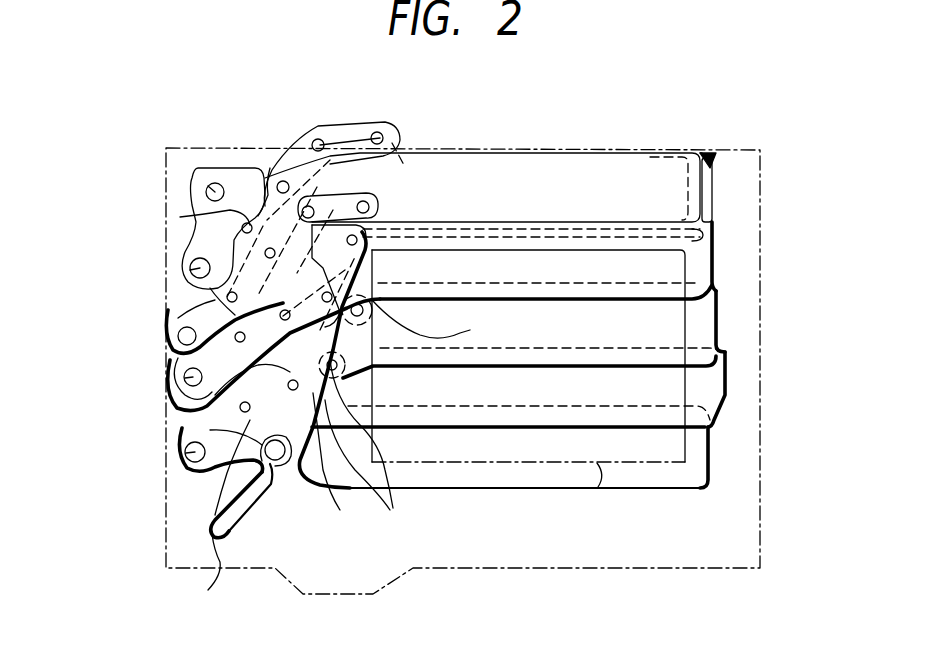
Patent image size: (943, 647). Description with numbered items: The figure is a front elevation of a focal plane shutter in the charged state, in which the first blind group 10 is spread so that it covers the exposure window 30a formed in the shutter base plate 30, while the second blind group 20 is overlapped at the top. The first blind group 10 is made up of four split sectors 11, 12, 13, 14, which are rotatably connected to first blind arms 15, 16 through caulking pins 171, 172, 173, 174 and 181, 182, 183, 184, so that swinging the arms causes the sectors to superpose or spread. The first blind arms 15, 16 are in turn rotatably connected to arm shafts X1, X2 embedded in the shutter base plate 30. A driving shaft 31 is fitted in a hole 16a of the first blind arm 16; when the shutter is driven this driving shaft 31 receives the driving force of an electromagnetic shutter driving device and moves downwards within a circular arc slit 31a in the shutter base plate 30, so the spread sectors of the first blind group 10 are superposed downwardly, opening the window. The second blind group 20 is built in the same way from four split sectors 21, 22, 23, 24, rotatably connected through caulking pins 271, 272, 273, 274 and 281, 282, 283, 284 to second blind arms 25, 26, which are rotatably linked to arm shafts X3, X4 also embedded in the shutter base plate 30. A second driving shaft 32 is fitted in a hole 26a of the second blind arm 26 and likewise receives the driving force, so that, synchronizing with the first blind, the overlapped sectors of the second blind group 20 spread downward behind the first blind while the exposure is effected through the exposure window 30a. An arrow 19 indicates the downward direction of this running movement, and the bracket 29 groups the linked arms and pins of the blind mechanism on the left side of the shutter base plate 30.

The first blind group 10 is at (538, 495).
The split sector 11 is at (722, 256).
The split sector 12 is at (718, 328).
The split sector 13 is at (728, 390).
The split sector 14 is at (710, 452).
The first blind arm 15 is at (192, 396).
The first blind arm 16 is at (198, 466).
The hole 16a is at (266, 496).
The caulking pin 171 is at (225, 505).
The caulking pin 172 is at (377, 450).
The caulking pin 173 is at (364, 310).
The caulking pin 174 is at (370, 267).
The caulking pin 181 is at (240, 408).
The caulking pin 182 is at (351, 466).
The caulking pin 183 is at (340, 370).
The caulking pin 184 is at (440, 323).
The direction of movement 19 is at (197, 508).
The second blind group 20 is at (550, 146).
The split sector 21 is at (692, 163).
The split sector 22 is at (713, 193).
The split sector 23 is at (713, 228).
The split sector 24 is at (712, 160).
The second blind arm 25 is at (180, 320).
The second blind arm 26 is at (243, 187).
The hole 26a is at (203, 168).
The caulking pin 271 is at (227, 297).
The caulking pin 272 is at (265, 253).
The caulking pin 273 is at (314, 206).
The caulking pin 274 is at (370, 207).
The caulking pin 281 is at (242, 228).
The caulking pin 282 is at (283, 180).
The caulking pin 283 is at (320, 140).
The caulking pin 284 is at (372, 132).
The linkage mechanism 29 is at (168, 128).
The shutter base plate 30 is at (520, 570).
The exposure window 30a is at (598, 489).
The driving shaft 31 is at (283, 462).
The circular arc slit 31a is at (208, 590).
The driving shaft 32 is at (208, 186).
The arm shaft X1 is at (184, 377).
The arm shaft X2 is at (186, 452).
The arm shaft X3 is at (178, 336).
The arm shaft X4 is at (190, 268).